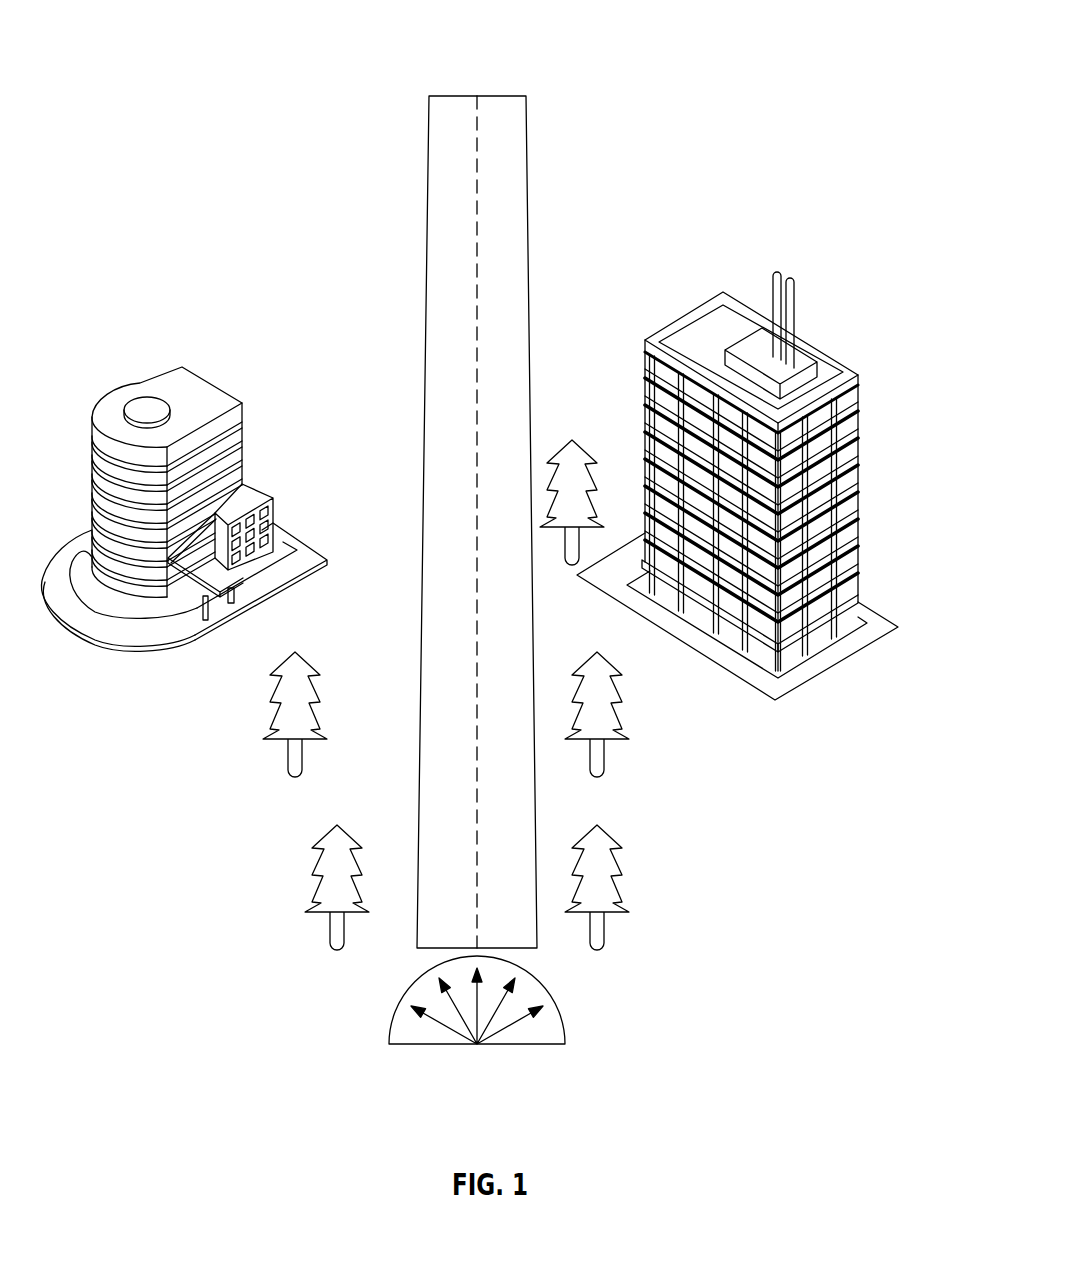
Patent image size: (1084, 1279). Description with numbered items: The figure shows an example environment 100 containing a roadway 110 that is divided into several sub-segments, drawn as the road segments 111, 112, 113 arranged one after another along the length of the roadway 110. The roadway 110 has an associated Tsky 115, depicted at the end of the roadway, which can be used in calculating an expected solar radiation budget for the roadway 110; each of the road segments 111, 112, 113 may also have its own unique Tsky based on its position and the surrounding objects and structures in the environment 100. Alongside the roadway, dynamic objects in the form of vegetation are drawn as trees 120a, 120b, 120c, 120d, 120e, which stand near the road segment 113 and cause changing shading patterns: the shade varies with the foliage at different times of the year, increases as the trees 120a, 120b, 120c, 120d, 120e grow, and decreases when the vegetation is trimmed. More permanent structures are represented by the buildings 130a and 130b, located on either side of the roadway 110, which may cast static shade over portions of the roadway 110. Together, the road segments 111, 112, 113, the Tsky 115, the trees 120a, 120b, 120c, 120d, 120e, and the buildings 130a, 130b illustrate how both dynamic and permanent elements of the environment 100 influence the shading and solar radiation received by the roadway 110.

The environment 100 is at (772, 58).
The roadway 110 is at (465, 95).
The road segment 111 is at (414, 177).
The road segment 112 is at (414, 443).
The road segment 113 is at (414, 667).
The Tsky 115 is at (458, 1046).
The tree 120a is at (620, 887).
The tree 120b is at (620, 715).
The tree 120c is at (270, 715).
The tree 120d is at (308, 887).
The tree 120e is at (568, 445).
The building 130a is at (865, 645).
The building 130b is at (247, 612).